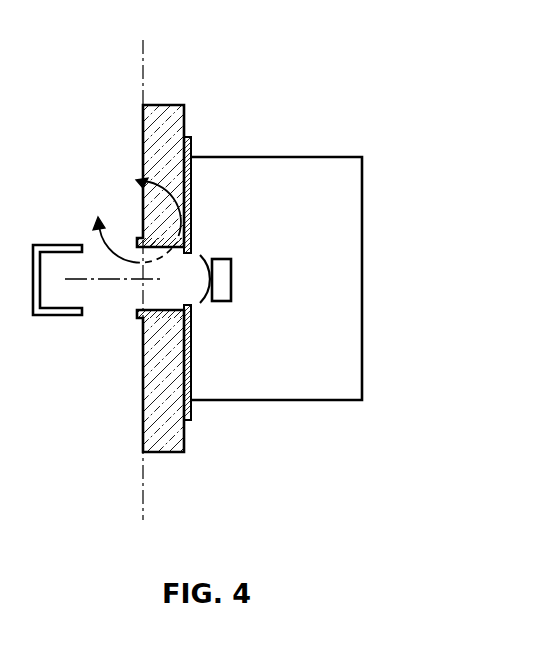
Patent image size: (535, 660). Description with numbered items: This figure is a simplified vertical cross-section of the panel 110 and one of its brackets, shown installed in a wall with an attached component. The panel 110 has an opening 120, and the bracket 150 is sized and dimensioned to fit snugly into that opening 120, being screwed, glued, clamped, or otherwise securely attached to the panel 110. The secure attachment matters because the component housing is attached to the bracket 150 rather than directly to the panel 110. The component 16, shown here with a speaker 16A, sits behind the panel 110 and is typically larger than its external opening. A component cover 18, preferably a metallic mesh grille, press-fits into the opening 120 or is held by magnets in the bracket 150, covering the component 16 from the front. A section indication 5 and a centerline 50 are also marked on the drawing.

The section view direction 5 is at (137, 219).
The component 16 is at (365, 198).
The speaker 16A is at (233, 285).
The component cover 18 is at (55, 245).
The axis of rotation 50 is at (143, 75).
The panel 110 is at (186, 118).
The opening 120 is at (127, 295).
The bracket 150 is at (192, 181).